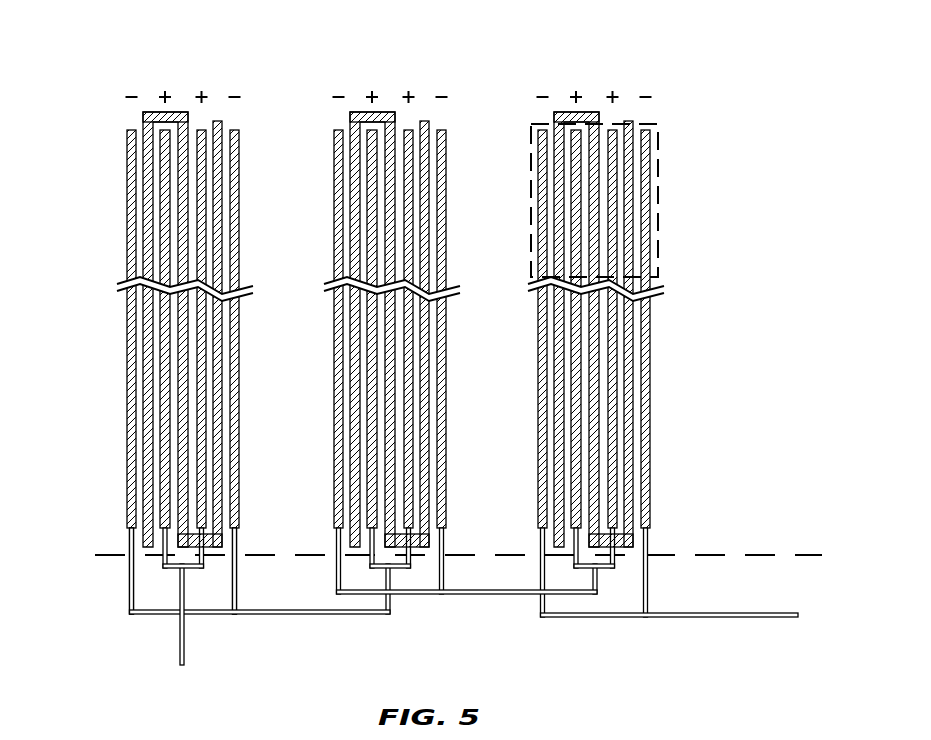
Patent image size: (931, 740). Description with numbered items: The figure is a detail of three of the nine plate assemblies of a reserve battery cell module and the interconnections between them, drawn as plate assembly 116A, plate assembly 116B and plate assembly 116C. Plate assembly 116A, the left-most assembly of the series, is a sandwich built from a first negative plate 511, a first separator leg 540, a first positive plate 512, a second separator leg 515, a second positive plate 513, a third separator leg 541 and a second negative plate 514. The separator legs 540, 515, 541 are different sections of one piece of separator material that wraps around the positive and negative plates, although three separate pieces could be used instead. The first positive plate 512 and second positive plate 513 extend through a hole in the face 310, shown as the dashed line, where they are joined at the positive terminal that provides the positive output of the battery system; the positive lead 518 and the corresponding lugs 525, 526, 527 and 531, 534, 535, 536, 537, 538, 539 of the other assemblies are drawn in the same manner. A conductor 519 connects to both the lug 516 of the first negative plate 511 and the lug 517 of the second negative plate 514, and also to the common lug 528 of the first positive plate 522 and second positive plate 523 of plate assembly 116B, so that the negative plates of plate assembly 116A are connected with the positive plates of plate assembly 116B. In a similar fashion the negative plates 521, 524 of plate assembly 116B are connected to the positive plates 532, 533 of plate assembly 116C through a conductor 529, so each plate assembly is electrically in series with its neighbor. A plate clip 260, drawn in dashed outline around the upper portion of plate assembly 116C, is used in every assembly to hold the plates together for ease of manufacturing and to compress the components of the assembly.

The plate assembly 116A is at (173, 68).
The plate assembly 116B is at (386, 68).
The plate assembly 116C is at (601, 68).
The plate clip 260 is at (660, 143).
The face 310 is at (805, 554).
The first negative plate 511 is at (130, 402).
The first positive plate 512 is at (163, 462).
The second positive plate 513 is at (203, 442).
The second negative plate 514 is at (238, 478).
The second separator leg 515 is at (143, 113).
The lug 516 is at (129, 590).
The lug 517 is at (236, 572).
The positive terminal lead 518 is at (178, 638).
The conductor 519 is at (250, 616).
The negative plate 521 is at (299, 329).
The first positive plate 522 is at (326, 349).
The second positive plate 523 is at (460, 349).
The negative plate 524 is at (483, 329).
The guard electrode top connection 525 is at (331, 122).
The negative electrode lead 526 is at (336, 548).
The negative electrode lead 527 is at (444, 572).
The common lug 528 is at (391, 600).
The conductor 529 is at (505, 597).
The first negative electrode 531 is at (504, 329).
The positive plate 532 is at (529, 349).
The positive plate 533 is at (666, 349).
The second negative electrode 534 is at (688, 329).
The guard electrode top connection 535 is at (537, 120).
The negative electrode lead 536 is at (540, 548).
The negative electrode lead 537 is at (648, 572).
The interconnection lead 538 is at (600, 595).
The output line 539 is at (742, 618).
The first separator leg 540 is at (143, 157).
The third separator leg 541 is at (222, 158).